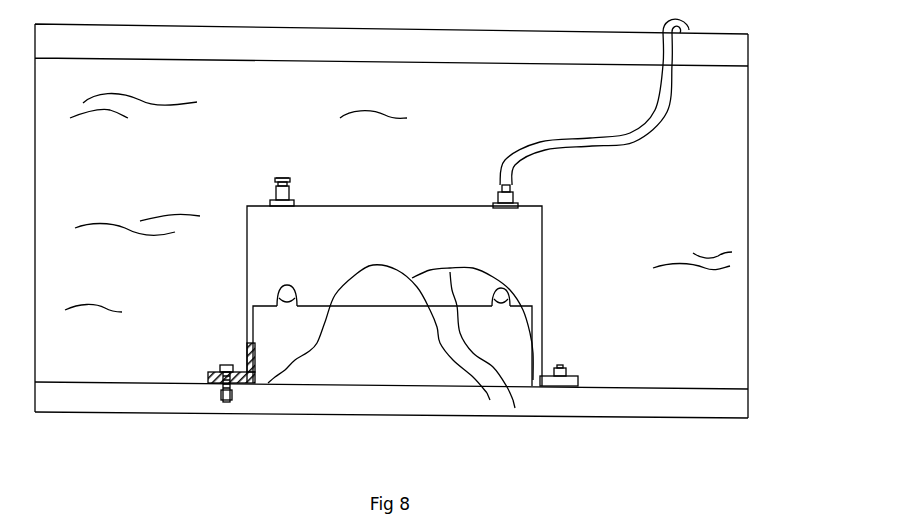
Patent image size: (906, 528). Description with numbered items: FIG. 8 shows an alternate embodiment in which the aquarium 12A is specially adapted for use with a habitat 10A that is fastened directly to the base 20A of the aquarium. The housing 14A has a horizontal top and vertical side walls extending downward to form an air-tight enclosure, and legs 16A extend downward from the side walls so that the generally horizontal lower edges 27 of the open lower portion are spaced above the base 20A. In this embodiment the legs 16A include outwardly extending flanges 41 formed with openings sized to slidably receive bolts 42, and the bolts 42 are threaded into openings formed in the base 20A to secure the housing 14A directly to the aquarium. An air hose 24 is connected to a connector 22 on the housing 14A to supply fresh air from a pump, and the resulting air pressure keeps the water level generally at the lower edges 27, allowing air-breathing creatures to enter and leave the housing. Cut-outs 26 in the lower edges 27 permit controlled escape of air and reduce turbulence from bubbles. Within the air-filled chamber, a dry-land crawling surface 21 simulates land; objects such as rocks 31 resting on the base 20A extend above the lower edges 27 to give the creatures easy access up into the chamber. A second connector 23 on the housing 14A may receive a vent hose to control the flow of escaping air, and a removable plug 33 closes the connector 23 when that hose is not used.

The habitat 10A is at (608, 184).
The aquarium 12A is at (748, 280).
The housing 14A is at (543, 245).
The legs 16A is at (247, 325).
The base 20A is at (627, 418).
The crawling surface 21 is at (450, 272).
The connector 22 is at (497, 201).
The second connector 23 is at (270, 198).
The air hose 24 is at (605, 130).
The cut-outs 26 is at (280, 305).
The lower edges 27 is at (513, 400).
The rocks 31 is at (315, 343).
The removable plug 33 is at (283, 178).
The flanges 41 is at (207, 377).
The bolts 42 is at (226, 398).